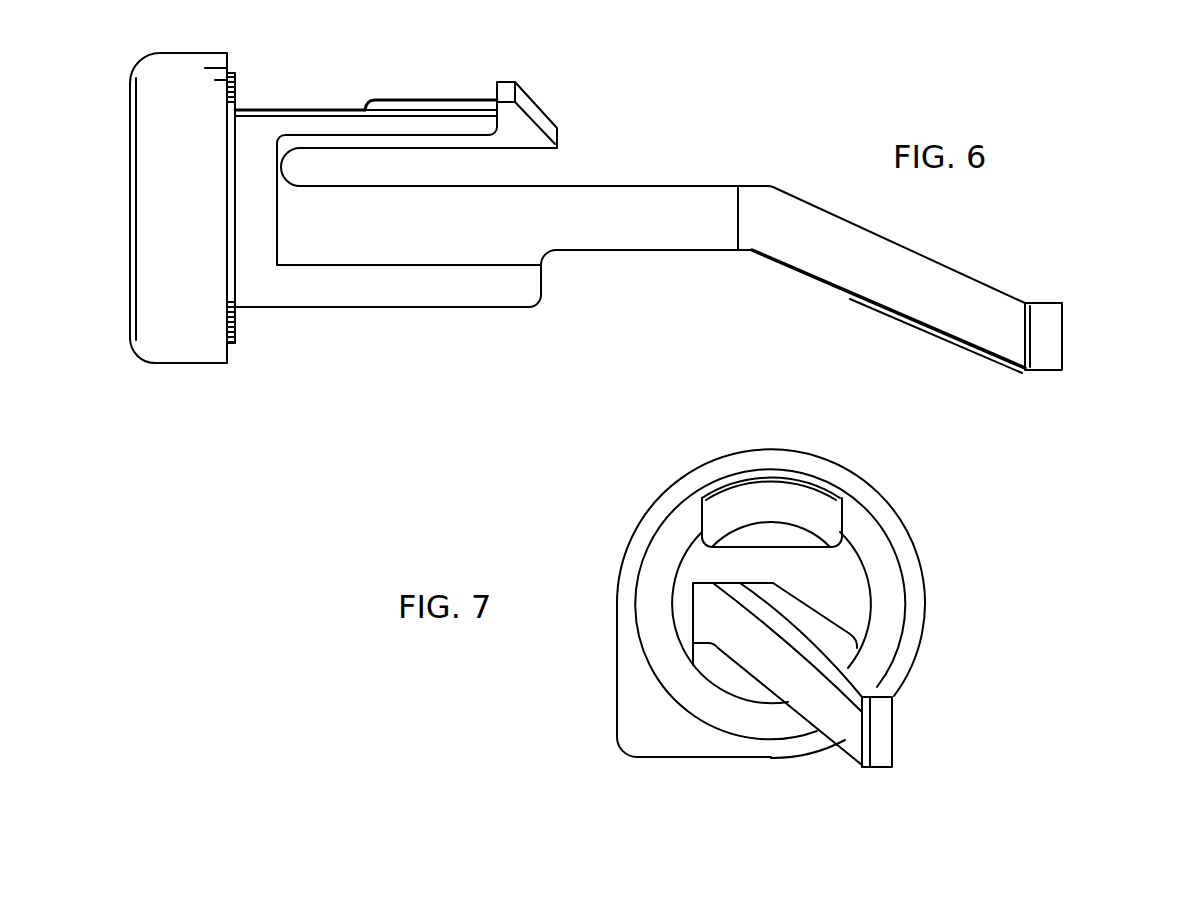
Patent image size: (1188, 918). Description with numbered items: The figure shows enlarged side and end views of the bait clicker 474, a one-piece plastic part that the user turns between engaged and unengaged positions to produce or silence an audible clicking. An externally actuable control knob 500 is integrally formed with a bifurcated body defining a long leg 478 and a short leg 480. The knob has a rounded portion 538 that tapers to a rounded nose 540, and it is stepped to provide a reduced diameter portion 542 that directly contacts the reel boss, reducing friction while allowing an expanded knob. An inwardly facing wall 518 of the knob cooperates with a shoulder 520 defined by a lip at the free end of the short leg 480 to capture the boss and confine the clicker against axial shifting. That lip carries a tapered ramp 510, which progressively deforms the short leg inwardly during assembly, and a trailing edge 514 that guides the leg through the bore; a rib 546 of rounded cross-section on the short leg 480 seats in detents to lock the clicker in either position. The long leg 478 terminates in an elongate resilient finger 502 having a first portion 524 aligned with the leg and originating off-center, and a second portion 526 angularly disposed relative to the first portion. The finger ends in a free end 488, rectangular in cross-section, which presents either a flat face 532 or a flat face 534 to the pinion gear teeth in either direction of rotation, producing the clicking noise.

In FIG. 6, the bait clicker 474 is at (367, 316).
In FIG. 6, the long leg 478 is at (520, 245).
In FIG. 7, the long leg 478 is at (705, 627).
In FIG. 6, the short leg 480 is at (262, 124).
In FIG. 7, the short leg 480 is at (845, 546).
In FIG. 6, the free end 488 is at (1052, 343).
In FIG. 7, the free end 488 is at (892, 713).
In FIG. 6, the control knob 500 is at (200, 352).
In FIG. 7, the control knob 500 is at (640, 540).
In FIG. 6, the finger 502 is at (780, 263).
In FIG. 7, the finger 502 is at (860, 677).
In FIG. 6, the tapered ramp 510 is at (540, 117).
In FIG. 7, the tapered ramp 510 is at (782, 495).
In FIG. 6, the trailing edge 514 is at (495, 93).
In FIG. 6, the inwardly facing wall 518 is at (237, 88).
In FIG. 7, the inwardly facing wall 518 is at (890, 577).
In FIG. 6, the shoulder 520 is at (492, 100).
In FIG. 6, the first portion 524 is at (643, 237).
In FIG. 6, the second portion 526 is at (887, 286).
In FIG. 6, the flat face 532 is at (1052, 313).
In FIG. 7, the flat face 532 is at (858, 767).
In FIG. 7, the flat face 534 is at (893, 740).
In FIG. 7, the rounded portion 538 is at (848, 468).
In FIG. 7, the rounded nose 540 is at (643, 733).
In FIG. 6, the reduced diameter portion 542 is at (232, 330).
In FIG. 7, the reduced diameter portion 542 is at (680, 523).
In FIG. 6, the rib 546 is at (373, 96).